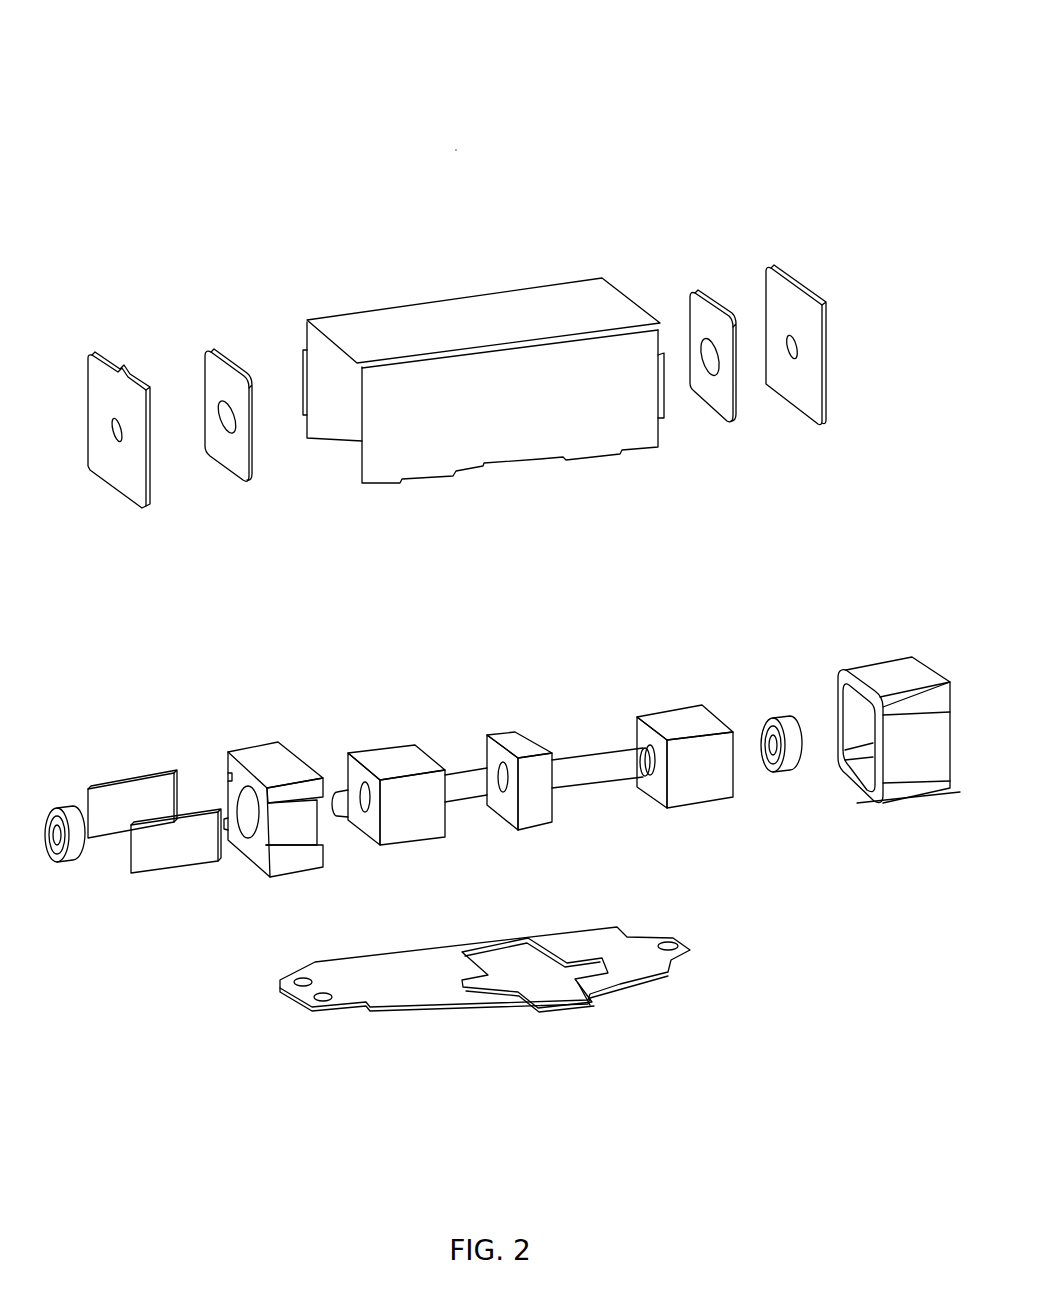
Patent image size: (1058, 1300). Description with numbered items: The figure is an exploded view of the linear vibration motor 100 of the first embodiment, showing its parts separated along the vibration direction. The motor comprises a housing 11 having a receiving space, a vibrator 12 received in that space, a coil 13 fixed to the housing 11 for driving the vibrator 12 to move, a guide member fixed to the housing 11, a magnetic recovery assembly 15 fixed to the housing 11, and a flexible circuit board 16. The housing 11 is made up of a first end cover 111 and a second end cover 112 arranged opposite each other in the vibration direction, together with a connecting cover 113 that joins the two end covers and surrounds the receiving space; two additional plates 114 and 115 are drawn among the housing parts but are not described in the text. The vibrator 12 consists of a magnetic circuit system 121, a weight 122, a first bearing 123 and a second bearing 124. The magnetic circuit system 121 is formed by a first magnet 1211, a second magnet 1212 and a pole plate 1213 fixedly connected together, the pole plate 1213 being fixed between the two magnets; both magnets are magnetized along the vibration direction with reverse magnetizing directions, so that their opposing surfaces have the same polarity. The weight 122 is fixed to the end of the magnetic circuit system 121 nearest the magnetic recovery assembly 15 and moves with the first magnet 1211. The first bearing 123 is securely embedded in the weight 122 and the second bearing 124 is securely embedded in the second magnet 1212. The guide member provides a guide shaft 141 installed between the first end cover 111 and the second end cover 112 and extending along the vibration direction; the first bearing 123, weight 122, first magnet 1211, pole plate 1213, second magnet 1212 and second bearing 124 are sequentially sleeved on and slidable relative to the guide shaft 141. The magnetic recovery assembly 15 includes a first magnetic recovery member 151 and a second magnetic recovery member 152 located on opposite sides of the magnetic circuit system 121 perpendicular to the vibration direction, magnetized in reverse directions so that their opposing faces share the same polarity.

The linear vibration motor 100 is at (452, 41).
The housing 11 is at (128, 205).
The first end cover 111 is at (106, 378).
The second end cover 112 is at (788, 300).
The connecting cover 113 is at (452, 328).
The first inner plate 114 is at (218, 378).
The second inner plate 115 is at (700, 317).
The vibrator 12 is at (133, 605).
The magnetic circuit system 121 is at (368, 665).
The first magnet 1211 is at (392, 757).
The second magnet 1212 is at (688, 723).
The pole plate 1213 is at (530, 748).
The weight 122 is at (267, 752).
The first bearing 123 is at (63, 812).
The second bearing 124 is at (781, 715).
The coil 13 is at (920, 753).
The guide shaft 141 is at (592, 772).
The magnetic recovery assembly 15 is at (88, 1022).
The first magnetic recovery member 151 is at (108, 820).
The second magnetic recovery member 152 is at (172, 853).
The flexible circuit board 16 is at (548, 1010).